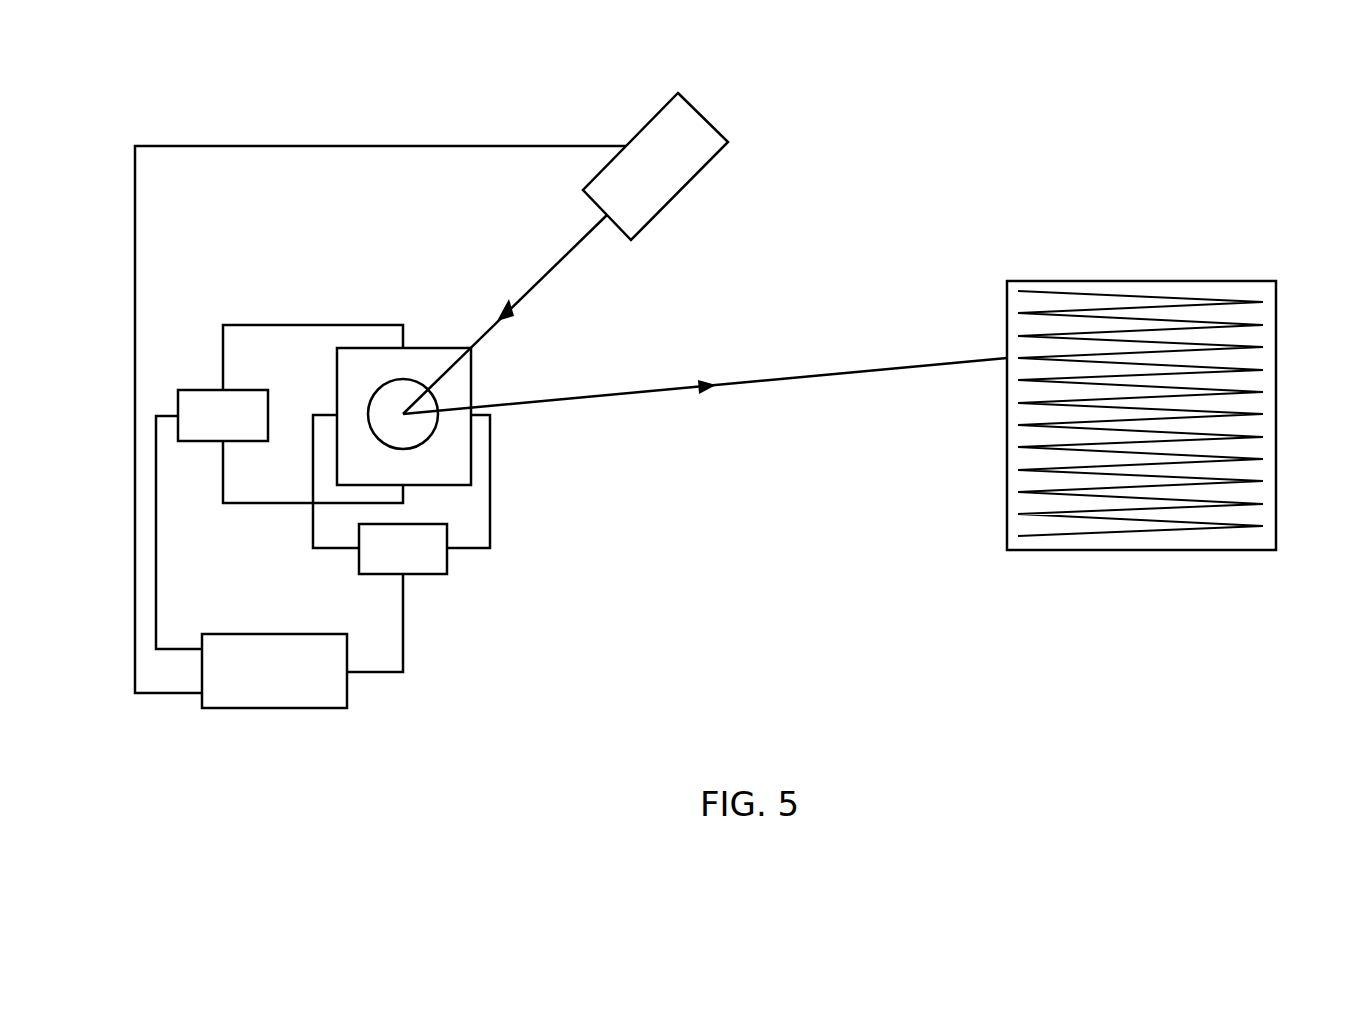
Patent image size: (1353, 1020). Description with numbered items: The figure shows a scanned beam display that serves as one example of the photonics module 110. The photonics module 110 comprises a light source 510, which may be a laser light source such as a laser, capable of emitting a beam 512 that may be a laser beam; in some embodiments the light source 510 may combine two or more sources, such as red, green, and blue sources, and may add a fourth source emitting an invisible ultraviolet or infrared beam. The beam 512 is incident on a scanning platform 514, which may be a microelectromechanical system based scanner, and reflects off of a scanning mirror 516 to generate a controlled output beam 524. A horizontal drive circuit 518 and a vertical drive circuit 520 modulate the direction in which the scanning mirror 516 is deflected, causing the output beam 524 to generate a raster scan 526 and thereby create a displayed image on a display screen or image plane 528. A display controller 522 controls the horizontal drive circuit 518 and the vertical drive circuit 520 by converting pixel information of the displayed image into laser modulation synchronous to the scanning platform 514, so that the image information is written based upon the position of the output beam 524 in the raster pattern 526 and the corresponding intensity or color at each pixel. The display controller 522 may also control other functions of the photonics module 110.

The photonics module 110 is at (1176, 130).
The light source 510 is at (707, 122).
The beam 512 is at (548, 268).
The scanning platform 514 is at (437, 348).
The scanning mirror 516 is at (423, 438).
The horizontal drive circuit 518 is at (212, 390).
The vertical drive circuit 520 is at (447, 558).
The display controller 522 is at (347, 693).
The output beam 524 is at (643, 394).
The raster scan 526 is at (1183, 298).
The image plane 528 is at (1276, 300).